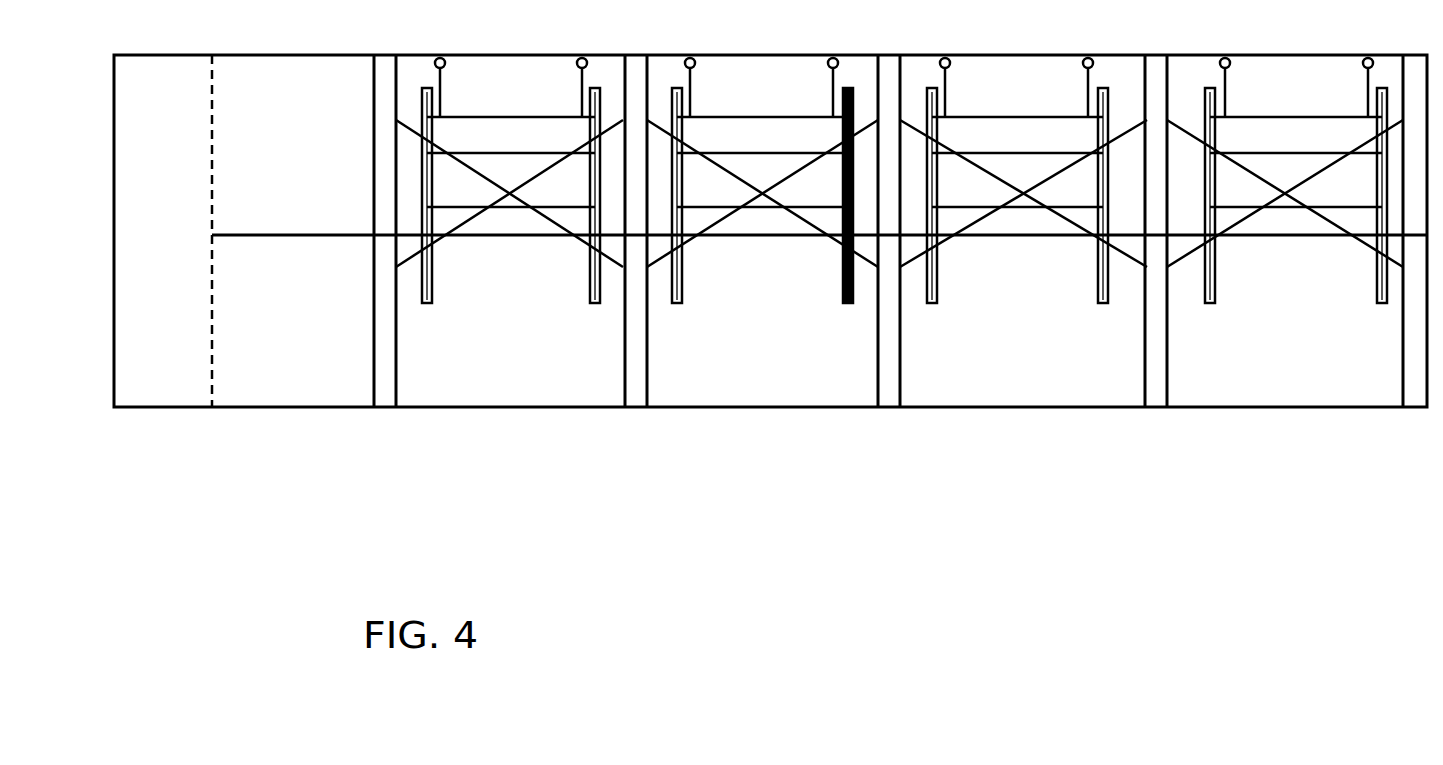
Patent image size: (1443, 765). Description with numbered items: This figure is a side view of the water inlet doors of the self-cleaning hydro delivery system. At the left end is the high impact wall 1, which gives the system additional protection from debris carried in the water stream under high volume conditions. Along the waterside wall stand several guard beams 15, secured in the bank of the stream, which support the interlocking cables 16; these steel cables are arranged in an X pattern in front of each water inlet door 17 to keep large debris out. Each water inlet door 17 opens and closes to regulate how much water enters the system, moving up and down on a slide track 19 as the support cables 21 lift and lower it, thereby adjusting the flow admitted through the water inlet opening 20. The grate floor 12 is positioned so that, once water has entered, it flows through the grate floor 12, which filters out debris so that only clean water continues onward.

The high impact wall 1 is at (154, 300).
The grate floor 12 is at (353, 240).
The guard beam 15 is at (1165, 370).
The interlocking cable 16 is at (727, 217).
The water inlet door 17 is at (530, 192).
The slide track 19 is at (846, 303).
The water inlet opening 20 is at (1297, 237).
The support cable 21 is at (930, 88).